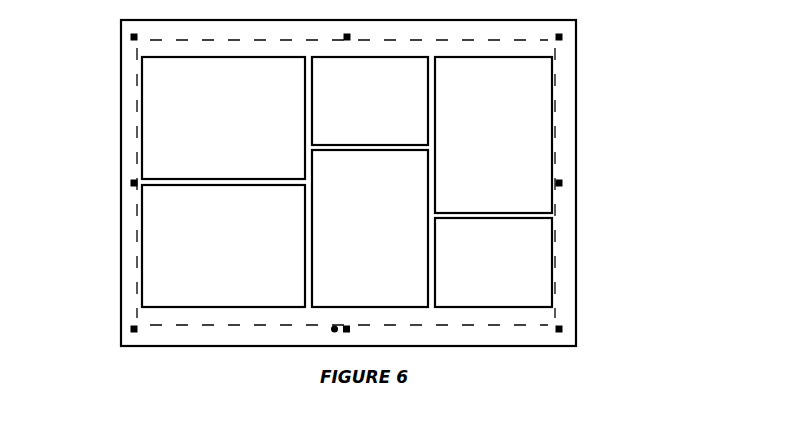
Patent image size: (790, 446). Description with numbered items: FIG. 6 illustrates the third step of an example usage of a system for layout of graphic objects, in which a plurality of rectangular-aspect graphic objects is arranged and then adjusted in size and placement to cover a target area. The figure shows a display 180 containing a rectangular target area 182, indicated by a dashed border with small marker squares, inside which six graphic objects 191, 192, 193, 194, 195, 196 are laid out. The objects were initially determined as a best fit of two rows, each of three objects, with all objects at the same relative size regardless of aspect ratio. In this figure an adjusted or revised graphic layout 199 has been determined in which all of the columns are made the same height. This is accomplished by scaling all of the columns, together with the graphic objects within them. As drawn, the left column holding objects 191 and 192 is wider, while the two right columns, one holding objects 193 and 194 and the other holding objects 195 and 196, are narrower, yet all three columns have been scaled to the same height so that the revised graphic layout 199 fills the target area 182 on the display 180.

The display 180 is at (120, 169).
The target area 182 is at (553, 314).
The object 191 is at (223, 118).
The object 192 is at (223, 246).
The object 193 is at (370, 101).
The object 194 is at (370, 228).
The object 195 is at (493, 135).
The object 196 is at (493, 262).
The revised graphic layout 199 is at (447, 182).